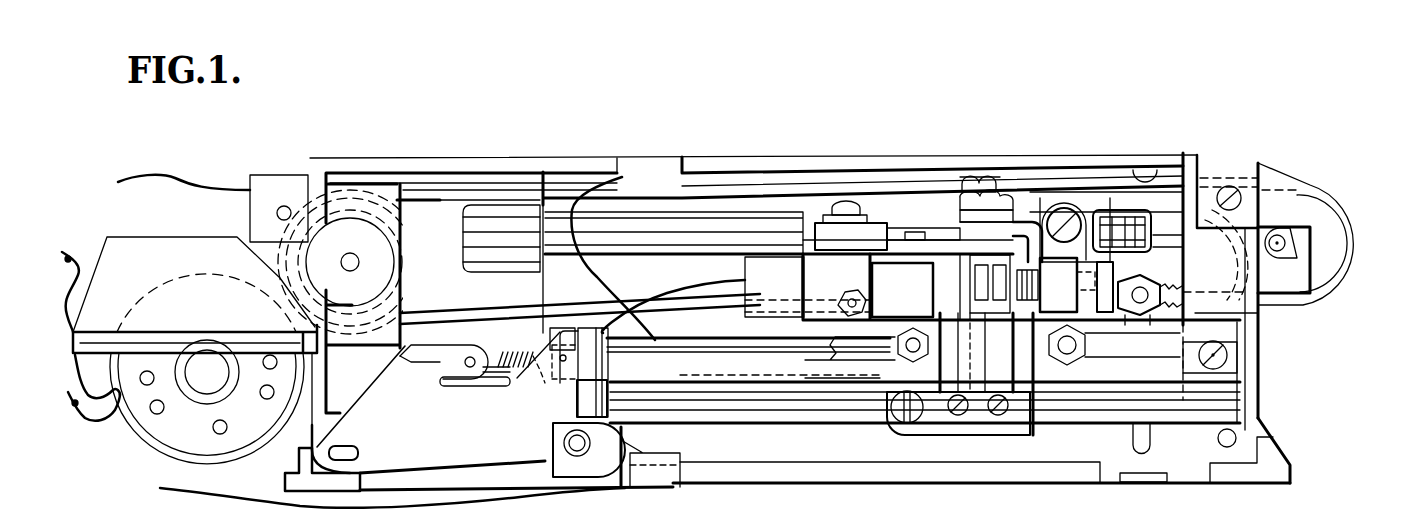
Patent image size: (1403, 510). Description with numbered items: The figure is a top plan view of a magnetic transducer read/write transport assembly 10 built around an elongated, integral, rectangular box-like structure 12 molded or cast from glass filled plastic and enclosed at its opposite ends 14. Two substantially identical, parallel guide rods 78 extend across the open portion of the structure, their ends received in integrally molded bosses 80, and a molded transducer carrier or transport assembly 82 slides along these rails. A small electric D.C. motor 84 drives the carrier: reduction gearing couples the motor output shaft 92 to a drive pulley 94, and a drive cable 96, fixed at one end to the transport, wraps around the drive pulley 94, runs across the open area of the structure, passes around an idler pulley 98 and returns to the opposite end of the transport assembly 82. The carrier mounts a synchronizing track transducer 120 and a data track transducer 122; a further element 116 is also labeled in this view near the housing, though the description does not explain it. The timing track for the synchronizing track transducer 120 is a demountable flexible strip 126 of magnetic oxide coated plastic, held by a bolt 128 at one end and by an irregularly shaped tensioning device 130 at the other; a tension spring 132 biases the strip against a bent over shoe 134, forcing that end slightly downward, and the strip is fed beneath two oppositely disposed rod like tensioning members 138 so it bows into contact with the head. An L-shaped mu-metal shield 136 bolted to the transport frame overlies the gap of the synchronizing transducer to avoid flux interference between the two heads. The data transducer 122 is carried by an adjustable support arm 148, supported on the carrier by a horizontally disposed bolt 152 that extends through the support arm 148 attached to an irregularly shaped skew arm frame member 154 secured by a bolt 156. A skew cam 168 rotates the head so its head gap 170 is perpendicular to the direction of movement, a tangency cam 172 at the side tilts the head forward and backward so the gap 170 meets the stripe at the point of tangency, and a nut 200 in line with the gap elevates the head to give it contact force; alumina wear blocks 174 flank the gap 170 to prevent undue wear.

The magnetic transducer read/write transport assembly 10 is at (688, 149).
The box-like structure 12 is at (1110, 157).
The ends 14 is at (320, 413).
The guide rods 78 is at (637, 240).
The bosses 80 is at (510, 235).
The transducer carrier or transport assembly 82 is at (865, 330).
The electric D.C. motor 84 is at (162, 433).
The motor output shaft 92 is at (347, 253).
The drive pulley 94 is at (308, 207).
The drive cable 96 is at (433, 197).
The idler pulley 98 is at (1328, 198).
The cylinder 116 is at (1127, 232).
The synchronizing track transducer 120 is at (1037, 417).
The data track transducer 122 is at (1003, 275).
The flexible strip 126 is at (717, 362).
The bolt 128 is at (1230, 360).
The tensioning device 130 is at (401, 437).
The tension spring 132 is at (550, 375).
The bent over shoe 134 is at (607, 366).
The L-shaped mu-metal shield 136 is at (980, 413).
The rod like tensioning members 138 is at (888, 422).
The adjustable support arm 148 is at (805, 262).
The horizontally disposed bolt 152 is at (990, 203).
The skew arm frame member 154 is at (947, 240).
The bolt 156 is at (842, 203).
The skew cam 168 is at (1064, 206).
The head gap 170 is at (990, 288).
The tangency cam 172 is at (903, 245).
The alumina wear blocks 174 is at (993, 272).
The nut 200 is at (1000, 182).